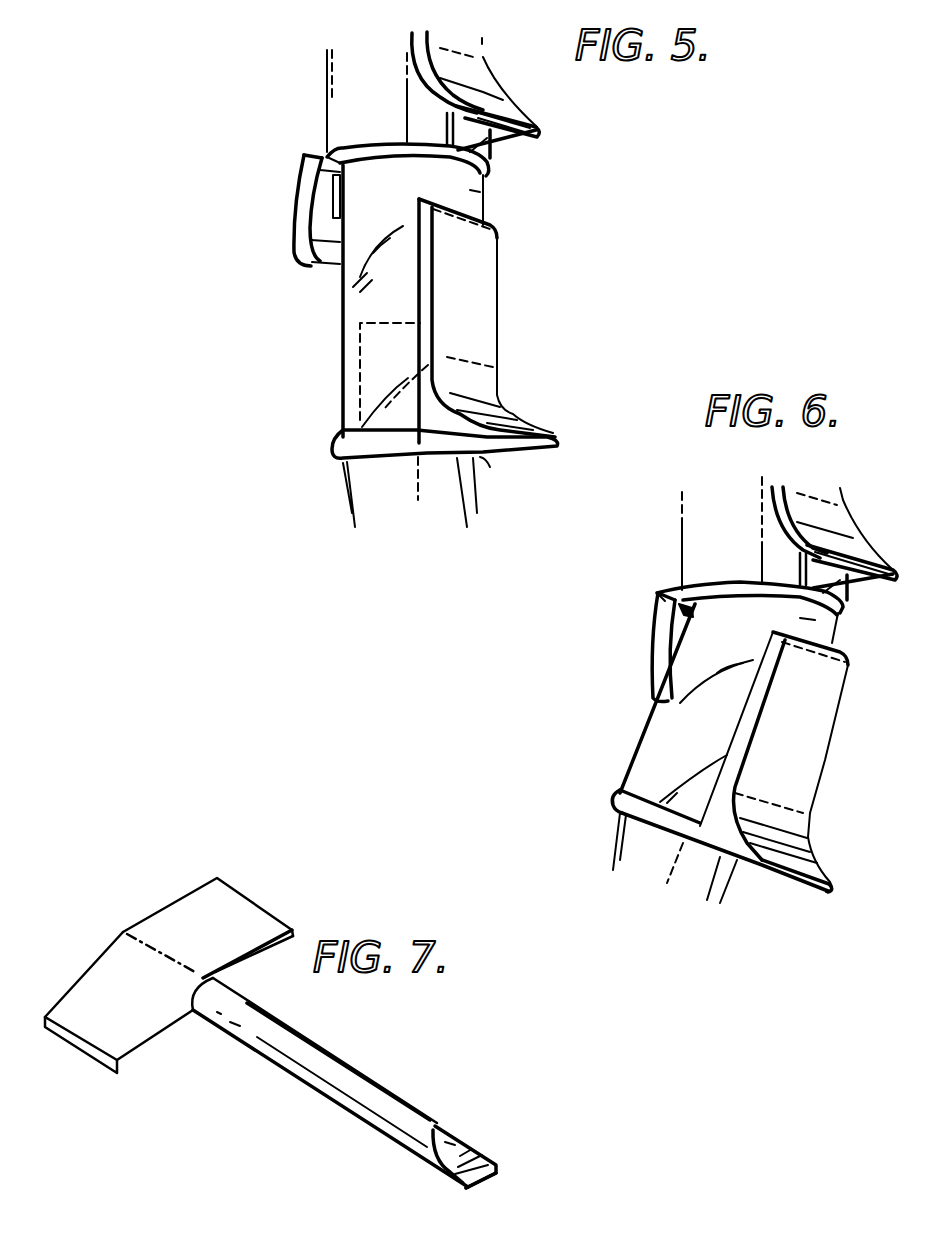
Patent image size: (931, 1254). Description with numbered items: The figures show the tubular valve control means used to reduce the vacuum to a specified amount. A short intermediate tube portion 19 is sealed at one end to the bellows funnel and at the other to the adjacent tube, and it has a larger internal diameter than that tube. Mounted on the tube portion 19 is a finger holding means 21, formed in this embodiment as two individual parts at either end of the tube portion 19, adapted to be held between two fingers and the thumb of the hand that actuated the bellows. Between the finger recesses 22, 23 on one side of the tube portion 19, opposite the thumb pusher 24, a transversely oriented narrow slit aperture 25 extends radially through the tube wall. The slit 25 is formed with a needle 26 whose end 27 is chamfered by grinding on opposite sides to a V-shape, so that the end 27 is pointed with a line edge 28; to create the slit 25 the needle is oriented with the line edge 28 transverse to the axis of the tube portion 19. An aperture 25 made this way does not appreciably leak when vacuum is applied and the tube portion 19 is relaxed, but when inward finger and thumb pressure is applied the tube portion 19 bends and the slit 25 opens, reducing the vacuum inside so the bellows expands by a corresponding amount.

In FIG. 5, the intermediate tube portion 19 is at (350, 300).
In FIG. 6, the intermediate tube portion 19 is at (643, 757).
In FIG. 5, the finger holding means 21 is at (311, 95).
In FIG. 6, the finger holding means 21 is at (847, 728).
In FIG. 5, the finger recess 22 is at (492, 103).
In FIG. 6, the finger recess 22 is at (833, 513).
In FIG. 5, the finger recess 23 is at (480, 316).
In FIG. 6, the finger recess 23 is at (800, 792).
In FIG. 5, the thumb pusher 24 is at (304, 193).
In FIG. 6, the thumb pusher 24 is at (657, 615).
In FIG. 5, the slit aperture 25 is at (445, 183).
In FIG. 6, the slit aperture 25 is at (800, 622).
In FIG. 7, the needle 26 is at (350, 1068).
In FIG. 7, the end 27 is at (465, 1140).
In FIG. 7, the line edge 28 is at (482, 1178).